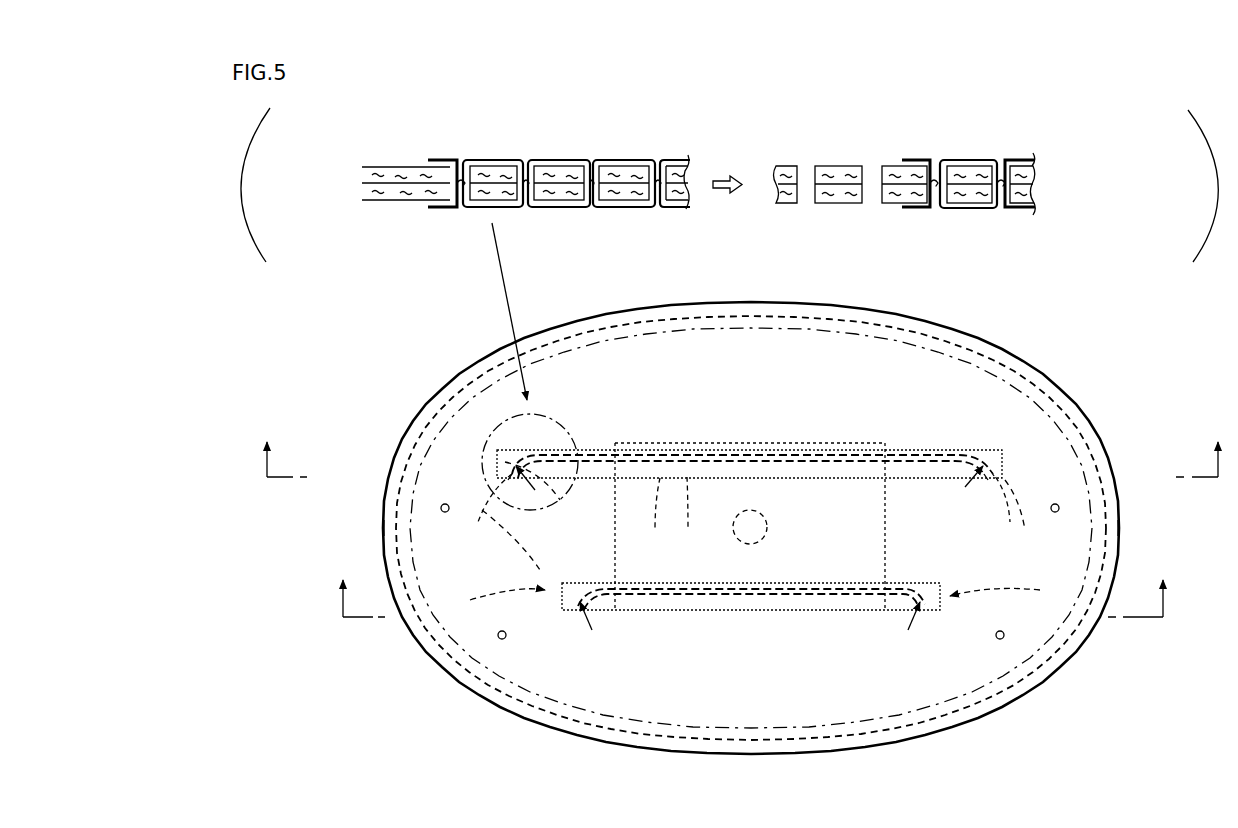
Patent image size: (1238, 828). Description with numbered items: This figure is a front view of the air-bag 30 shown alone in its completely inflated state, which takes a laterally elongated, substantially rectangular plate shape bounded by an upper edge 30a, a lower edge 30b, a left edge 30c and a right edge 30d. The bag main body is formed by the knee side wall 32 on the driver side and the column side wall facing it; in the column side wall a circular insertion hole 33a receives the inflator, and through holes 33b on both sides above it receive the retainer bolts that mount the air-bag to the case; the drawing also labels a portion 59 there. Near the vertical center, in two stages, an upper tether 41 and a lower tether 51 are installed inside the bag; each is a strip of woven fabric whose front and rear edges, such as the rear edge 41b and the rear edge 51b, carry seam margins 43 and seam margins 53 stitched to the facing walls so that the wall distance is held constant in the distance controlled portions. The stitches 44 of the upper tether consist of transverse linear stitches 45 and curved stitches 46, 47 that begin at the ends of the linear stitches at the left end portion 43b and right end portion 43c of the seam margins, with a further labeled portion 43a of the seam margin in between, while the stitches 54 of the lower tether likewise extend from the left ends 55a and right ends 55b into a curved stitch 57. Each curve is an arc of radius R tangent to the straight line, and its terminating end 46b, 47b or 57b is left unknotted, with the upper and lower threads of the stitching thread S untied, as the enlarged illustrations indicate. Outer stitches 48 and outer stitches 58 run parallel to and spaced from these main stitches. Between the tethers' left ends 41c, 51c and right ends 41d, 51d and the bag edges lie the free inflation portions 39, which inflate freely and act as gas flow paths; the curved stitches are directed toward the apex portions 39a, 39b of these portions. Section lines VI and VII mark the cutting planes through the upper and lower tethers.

The air-bag 30 is at (330, 408).
The upper edge 30a is at (748, 303).
The lower edge 30b is at (770, 754).
The left edge 30c is at (390, 528).
The right edge 30d is at (1118, 527).
The knee side wall 32 is at (377, 190).
The insertion hole 33a is at (748, 511).
The through holes 33b is at (790, 455).
The free inflation portions 39 is at (462, 578).
The apex portion 39a is at (440, 507).
The apex portion 39b is at (502, 640).
The upper tether 41 is at (915, 433).
The rear edge 41b is at (357, 173).
The left end 41c is at (473, 462).
The right end 41d is at (1010, 462).
The seam margins 43 is at (373, 167).
The holder portion 43a is at (667, 516).
The left end portion 43b is at (503, 516).
The right end portion 43c is at (1018, 508).
The stitches 44 is at (513, 463).
The linear stitches 45 is at (677, 450).
The curved stitch 46 is at (627, 153).
The terminating end 46b is at (430, 155).
The curved stitch 47 is at (983, 464).
The terminating end 47b is at (1009, 473).
The outer stitches 48 is at (630, 465).
The lower tether 51 is at (770, 614).
The rear edge 51b is at (740, 612).
The left end 51c is at (470, 605).
The right end 51d is at (1003, 637).
The seam margins 53 is at (820, 612).
The stitches 54 is at (738, 587).
The left ends 55a is at (603, 587).
The right ends 55b is at (892, 587).
The curved stitch 57 is at (578, 597).
The terminating end 57b is at (952, 605).
The outer stitches 58 is at (700, 592).
The guide groove 59 is at (893, 450).
The stitching thread S is at (558, 160).
The radius R is at (749, 558).
The section line VI is at (740, 446).
The section line VII is at (743, 584).